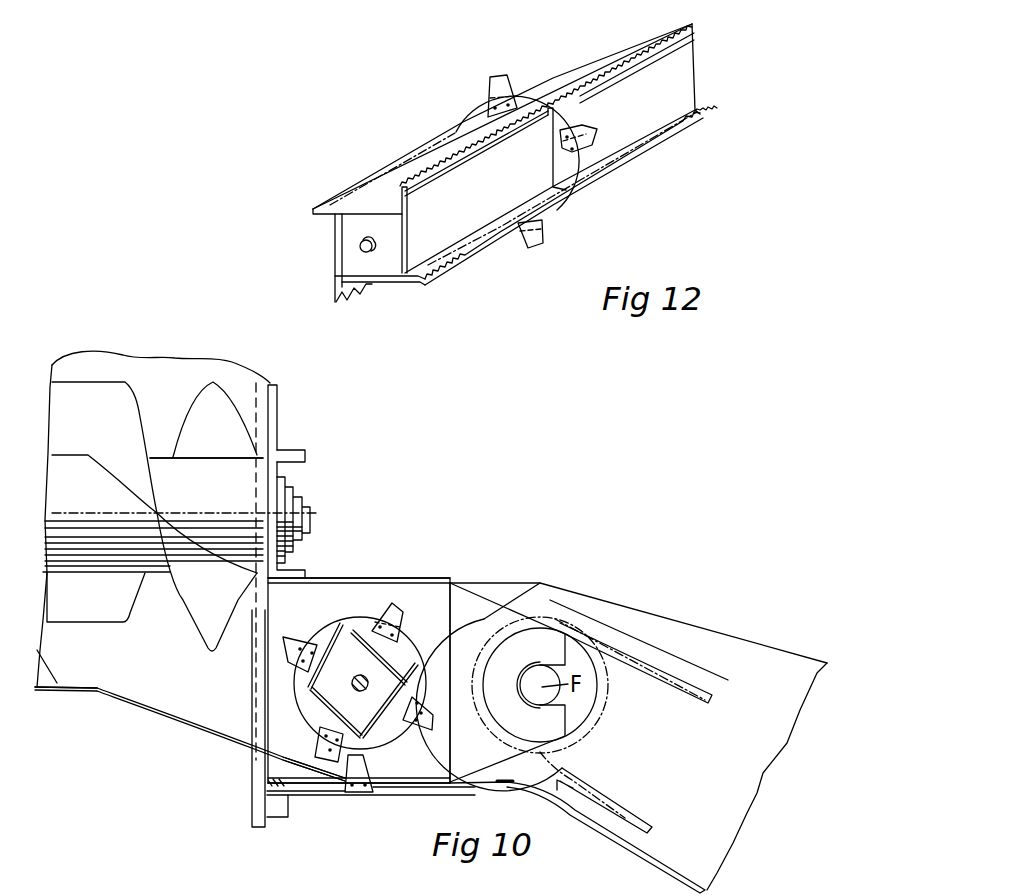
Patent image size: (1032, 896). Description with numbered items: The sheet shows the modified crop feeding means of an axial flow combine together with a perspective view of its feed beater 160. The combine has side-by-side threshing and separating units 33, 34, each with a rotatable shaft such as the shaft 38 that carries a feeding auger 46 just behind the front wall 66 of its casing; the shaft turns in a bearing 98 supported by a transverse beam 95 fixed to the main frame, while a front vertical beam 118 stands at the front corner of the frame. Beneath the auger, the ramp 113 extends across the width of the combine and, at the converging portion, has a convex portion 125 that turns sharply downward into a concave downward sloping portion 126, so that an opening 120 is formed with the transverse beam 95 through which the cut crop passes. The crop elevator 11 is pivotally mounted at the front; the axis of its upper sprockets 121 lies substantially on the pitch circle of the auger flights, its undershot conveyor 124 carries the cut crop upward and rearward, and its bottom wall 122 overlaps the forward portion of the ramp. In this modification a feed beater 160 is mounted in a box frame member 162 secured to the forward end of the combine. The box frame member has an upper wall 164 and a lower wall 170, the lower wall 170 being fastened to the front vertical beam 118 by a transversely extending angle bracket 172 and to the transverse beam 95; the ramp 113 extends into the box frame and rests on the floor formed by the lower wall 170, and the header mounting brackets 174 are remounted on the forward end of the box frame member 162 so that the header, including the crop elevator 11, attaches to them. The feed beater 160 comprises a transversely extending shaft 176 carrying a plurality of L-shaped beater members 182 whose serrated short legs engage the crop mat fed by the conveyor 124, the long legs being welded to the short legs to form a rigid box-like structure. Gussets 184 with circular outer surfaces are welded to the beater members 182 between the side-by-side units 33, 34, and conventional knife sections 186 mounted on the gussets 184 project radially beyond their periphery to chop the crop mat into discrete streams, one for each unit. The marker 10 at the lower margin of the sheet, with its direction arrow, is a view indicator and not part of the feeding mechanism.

In FIG. 10, the section line 10 is at (182, 885).
In FIG. 10, the crop elevator 11 is at (633, 577).
In FIG. 10, the unit 33 is at (243, 893).
In FIG. 10, the unit 34 is at (466, 885).
In FIG. 10, the rotatable shaft 38 is at (240, 477).
In FIG. 10, the feeding auger 46 is at (148, 378).
In FIG. 10, the front wall 66 is at (278, 399).
In FIG. 10, the transverse beam 95 is at (298, 467).
In FIG. 10, the bearing 98 is at (297, 507).
In FIG. 10, the ramp 113 is at (168, 725).
In FIG. 10, the front vertical beam 118 is at (253, 810).
In FIG. 10, the opening 120 is at (323, 603).
In FIG. 10, the upper sprockets 121 is at (606, 714).
In FIG. 10, the bottom wall 122 is at (593, 823).
In FIG. 10, the undershot conveyor 124 is at (590, 790).
In FIG. 10, the convex portion 125 is at (115, 695).
In FIG. 10, the downward sloping portion 126 is at (280, 757).
In FIG. 12, the feed beater 160 is at (441, 290).
In FIG. 10, the box frame member 162 is at (465, 563).
In FIG. 10, the upper wall 164 is at (313, 580).
In FIG. 10, the lower wall 170 is at (392, 788).
In FIG. 10, the angle bracket 172 is at (270, 803).
In FIG. 10, the header mounting brackets 174 is at (475, 607).
In FIG. 12, the shaft 176 is at (359, 251).
In FIG. 12, the L-shaped beater members 182 is at (335, 241).
In FIG. 10, the L-shaped beater members 182 is at (383, 658).
In FIG. 12, the gussets 184 is at (527, 98).
In FIG. 10, the gussets 184 is at (294, 683).
In FIG. 12, the knife sections 186 is at (493, 87).
In FIG. 10, the knife sections 186 is at (394, 608).